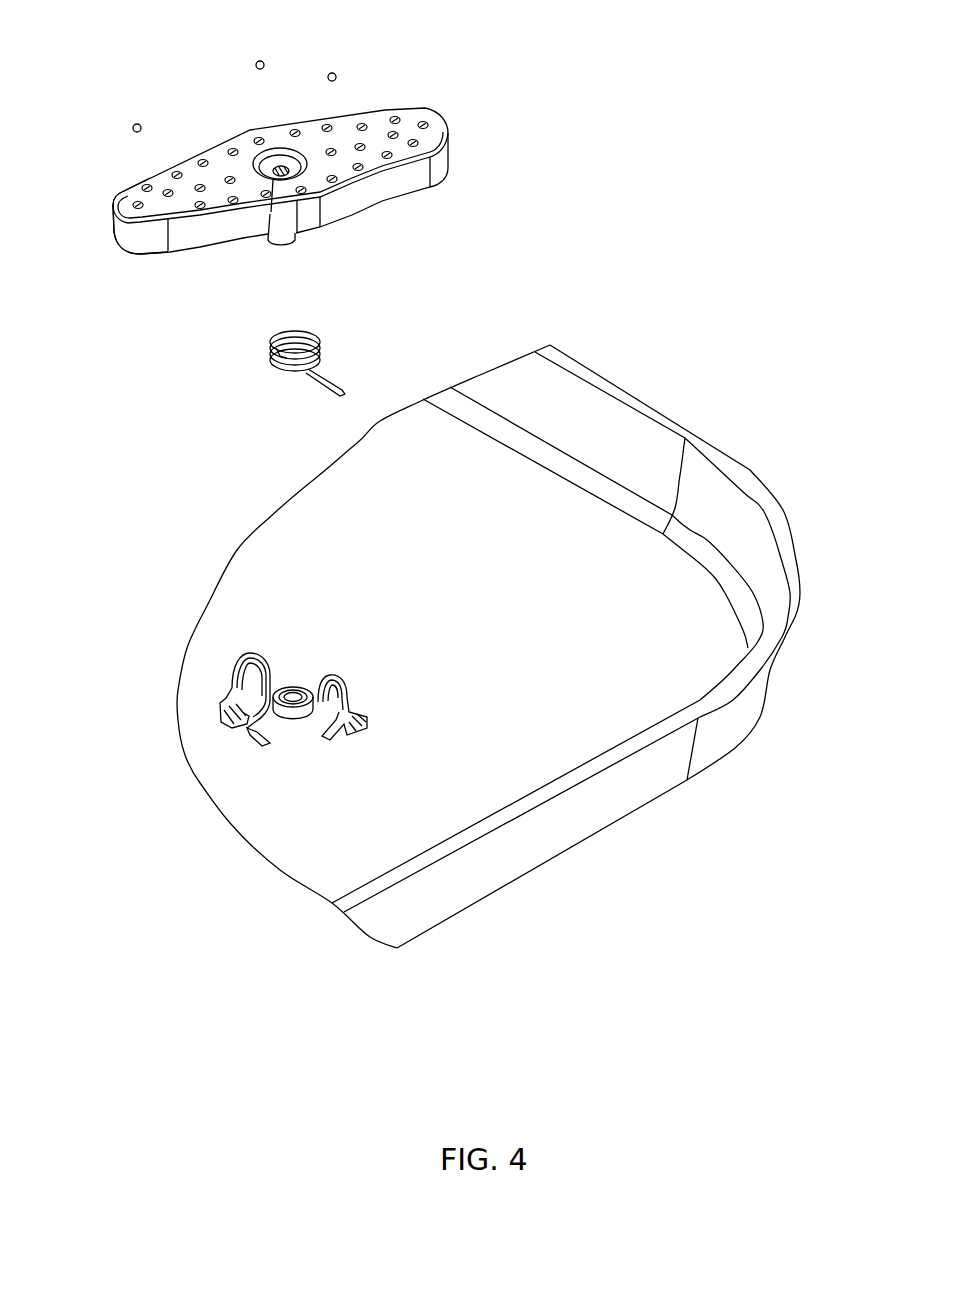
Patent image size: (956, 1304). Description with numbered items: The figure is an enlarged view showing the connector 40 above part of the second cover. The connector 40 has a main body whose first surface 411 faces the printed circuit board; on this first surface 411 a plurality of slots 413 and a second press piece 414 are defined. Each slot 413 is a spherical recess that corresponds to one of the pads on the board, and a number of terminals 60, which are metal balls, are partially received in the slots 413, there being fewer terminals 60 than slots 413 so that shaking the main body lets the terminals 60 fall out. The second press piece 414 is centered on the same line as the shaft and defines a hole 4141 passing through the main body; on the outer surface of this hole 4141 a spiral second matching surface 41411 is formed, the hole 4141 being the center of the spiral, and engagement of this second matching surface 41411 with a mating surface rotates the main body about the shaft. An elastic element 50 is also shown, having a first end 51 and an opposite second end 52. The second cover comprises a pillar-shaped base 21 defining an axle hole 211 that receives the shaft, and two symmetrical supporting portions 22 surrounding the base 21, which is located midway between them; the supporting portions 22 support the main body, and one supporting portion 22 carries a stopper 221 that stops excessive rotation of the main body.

The connector 40 is at (352, 176).
The first surface 411 is at (447, 143).
The slots 413 is at (135, 223).
The second press piece 414 is at (421, 241).
The hole 4141 is at (288, 243).
The second matching surface 41411 is at (288, 171).
The terminals 60 is at (137, 124).
The elastic element 50 is at (299, 373).
The first end 51 is at (273, 353).
The second end 52 is at (338, 391).
The base 21 is at (306, 852).
The axle hole 211 is at (298, 706).
The supporting portions 22 is at (350, 733).
The stopper 221 is at (250, 648).